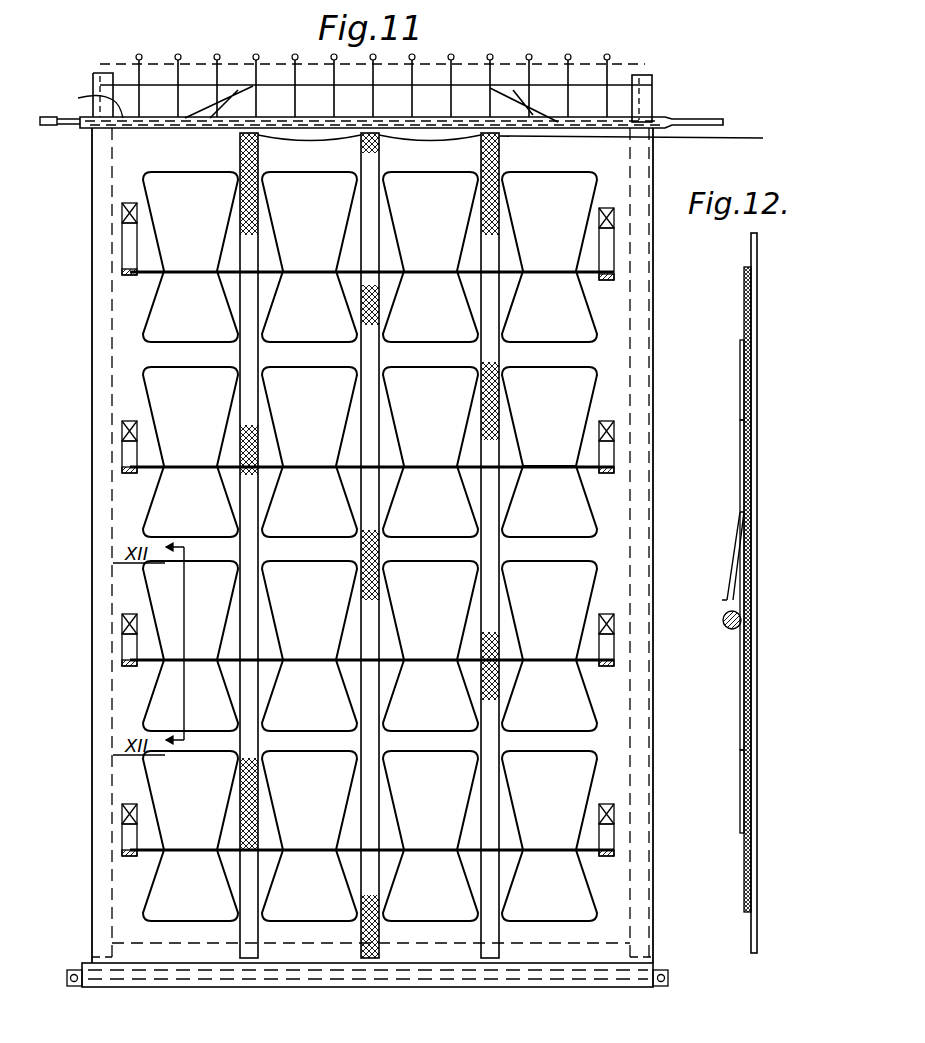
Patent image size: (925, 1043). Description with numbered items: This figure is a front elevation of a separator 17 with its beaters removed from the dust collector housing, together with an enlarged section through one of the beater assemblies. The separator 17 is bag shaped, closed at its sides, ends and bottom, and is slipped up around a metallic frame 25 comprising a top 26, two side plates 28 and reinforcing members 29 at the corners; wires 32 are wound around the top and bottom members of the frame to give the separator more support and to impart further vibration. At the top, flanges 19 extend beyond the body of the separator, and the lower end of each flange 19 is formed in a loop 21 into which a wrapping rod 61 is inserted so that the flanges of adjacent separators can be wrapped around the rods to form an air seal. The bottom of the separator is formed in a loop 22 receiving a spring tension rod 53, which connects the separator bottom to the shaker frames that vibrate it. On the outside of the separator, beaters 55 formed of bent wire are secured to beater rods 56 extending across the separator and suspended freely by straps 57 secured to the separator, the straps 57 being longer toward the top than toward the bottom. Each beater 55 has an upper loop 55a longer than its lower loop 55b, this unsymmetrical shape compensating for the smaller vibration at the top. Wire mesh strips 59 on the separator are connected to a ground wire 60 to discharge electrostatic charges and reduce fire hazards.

In FIG. 11, the separator 17 is at (615, 695).
In FIG. 12, the separator 17 is at (750, 881).
In FIG. 11, the flange 19 is at (50, 119).
In FIG. 11, the loop 21 is at (146, 128).
In FIG. 11, the loop 22 is at (406, 989).
In FIG. 11, the frame 25 is at (150, 70).
In FIG. 11, the top 26 is at (503, 75).
In FIG. 11, the side plate 28 is at (640, 100).
In FIG. 11, the reinforcing member 29 is at (533, 115).
In FIG. 11, the wire 32 is at (240, 100).
In FIG. 12, the wire 32 is at (758, 922).
In FIG. 11, the spring tension rod 53 is at (668, 978).
In FIG. 11, the beater 55 is at (314, 352).
In FIG. 12, the beater 55 is at (744, 406).
In FIG. 11, the upper loop 55a is at (556, 372).
In FIG. 12, the upper loop 55a is at (750, 336).
In FIG. 11, the lower loop 55b is at (515, 543).
In FIG. 12, the lower loop 55b is at (750, 832).
In FIG. 11, the beater rod 56 is at (402, 470).
In FIG. 12, the beater rod 56 is at (723, 622).
In FIG. 11, the strap 57 is at (131, 235).
In FIG. 12, the strap 57 is at (733, 566).
In FIG. 11, the wire mesh strip 59 is at (487, 355).
In FIG. 11, the ground wire 60 is at (713, 138).
In FIG. 11, the wrapping rod 61 is at (188, 128).